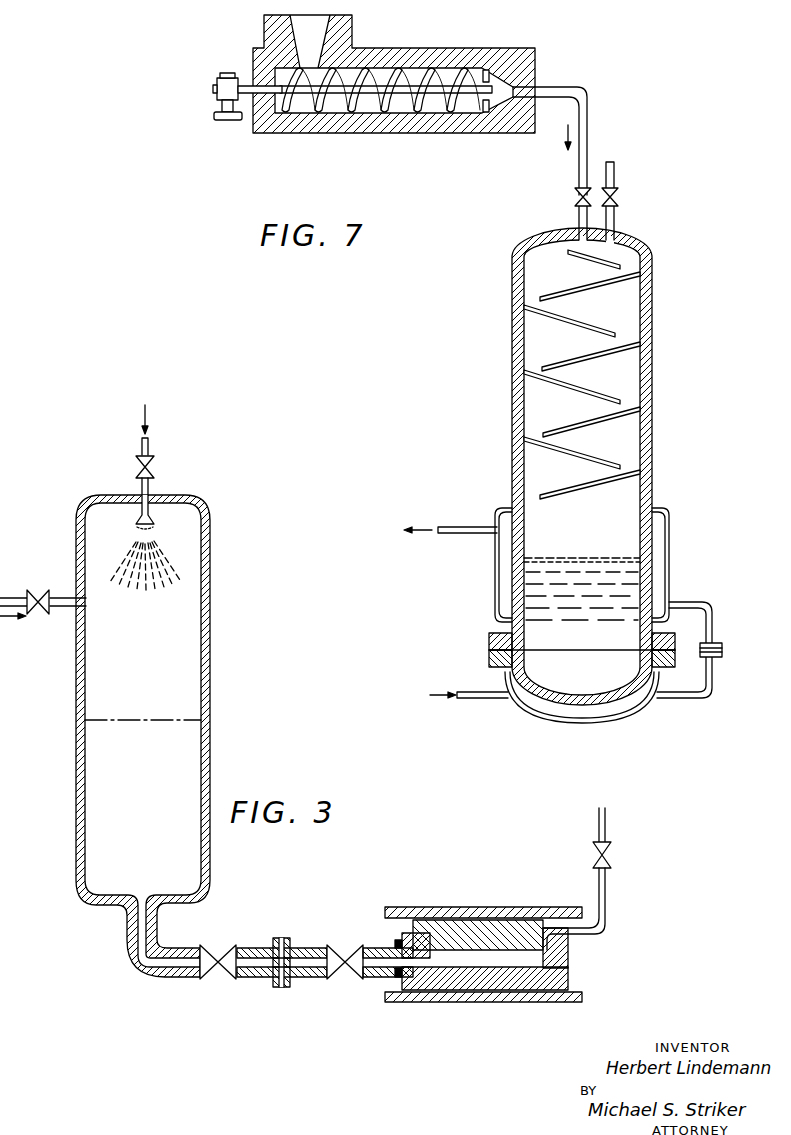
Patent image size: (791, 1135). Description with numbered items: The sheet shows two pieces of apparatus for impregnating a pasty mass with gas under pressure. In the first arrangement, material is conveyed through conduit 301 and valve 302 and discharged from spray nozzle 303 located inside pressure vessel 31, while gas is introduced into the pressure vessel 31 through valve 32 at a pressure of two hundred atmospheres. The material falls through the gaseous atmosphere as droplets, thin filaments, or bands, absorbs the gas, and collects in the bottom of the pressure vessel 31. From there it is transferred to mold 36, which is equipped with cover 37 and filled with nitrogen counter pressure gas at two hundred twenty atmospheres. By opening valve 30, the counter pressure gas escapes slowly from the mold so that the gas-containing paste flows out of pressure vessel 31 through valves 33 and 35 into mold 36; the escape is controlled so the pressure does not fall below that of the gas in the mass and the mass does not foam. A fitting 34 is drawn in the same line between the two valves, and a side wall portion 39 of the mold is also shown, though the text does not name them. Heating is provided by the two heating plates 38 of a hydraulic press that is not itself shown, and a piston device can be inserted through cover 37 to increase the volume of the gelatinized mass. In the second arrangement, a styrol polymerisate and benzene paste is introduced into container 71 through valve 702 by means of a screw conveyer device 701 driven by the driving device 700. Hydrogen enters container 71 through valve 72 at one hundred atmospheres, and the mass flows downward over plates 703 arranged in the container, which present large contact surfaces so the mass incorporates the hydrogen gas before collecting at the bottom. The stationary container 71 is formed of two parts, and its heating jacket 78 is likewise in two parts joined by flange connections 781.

In FIG. 7, the driving device 700 is at (216, 84).
In FIG. 7, the screw conveyer device 701 is at (456, 32).
In FIG. 7, the valve 702 is at (575, 197).
In FIG. 7, the valve 72 is at (618, 197).
In FIG. 7, the plates 703 is at (586, 289).
In FIG. 7, the container 71 is at (653, 363).
In FIG. 7, the heating jacket 78 is at (662, 553).
In FIG. 7, the flange connections 781 is at (724, 642).
In FIG. 3, the conduit 301 is at (150, 446).
In FIG. 3, the valve 302 is at (154, 470).
In FIG. 3, the spray nozzle 303 is at (153, 521).
In FIG. 3, the valve 32 is at (60, 582).
In FIG. 3, the pressure vessel 31 is at (211, 683).
In FIG. 3, the valve 33 is at (206, 976).
In FIG. 3, the pipe fitting 34 is at (272, 988).
In FIG. 3, the valve 35 is at (354, 976).
In FIG. 3, the mold 36 is at (560, 981).
In FIG. 3, the cover 37 is at (448, 932).
In FIG. 3, the heating plates 38 is at (536, 885).
In FIG. 3, the mold side wall 39 is at (565, 965).
In FIG. 3, the valve 30 is at (612, 864).